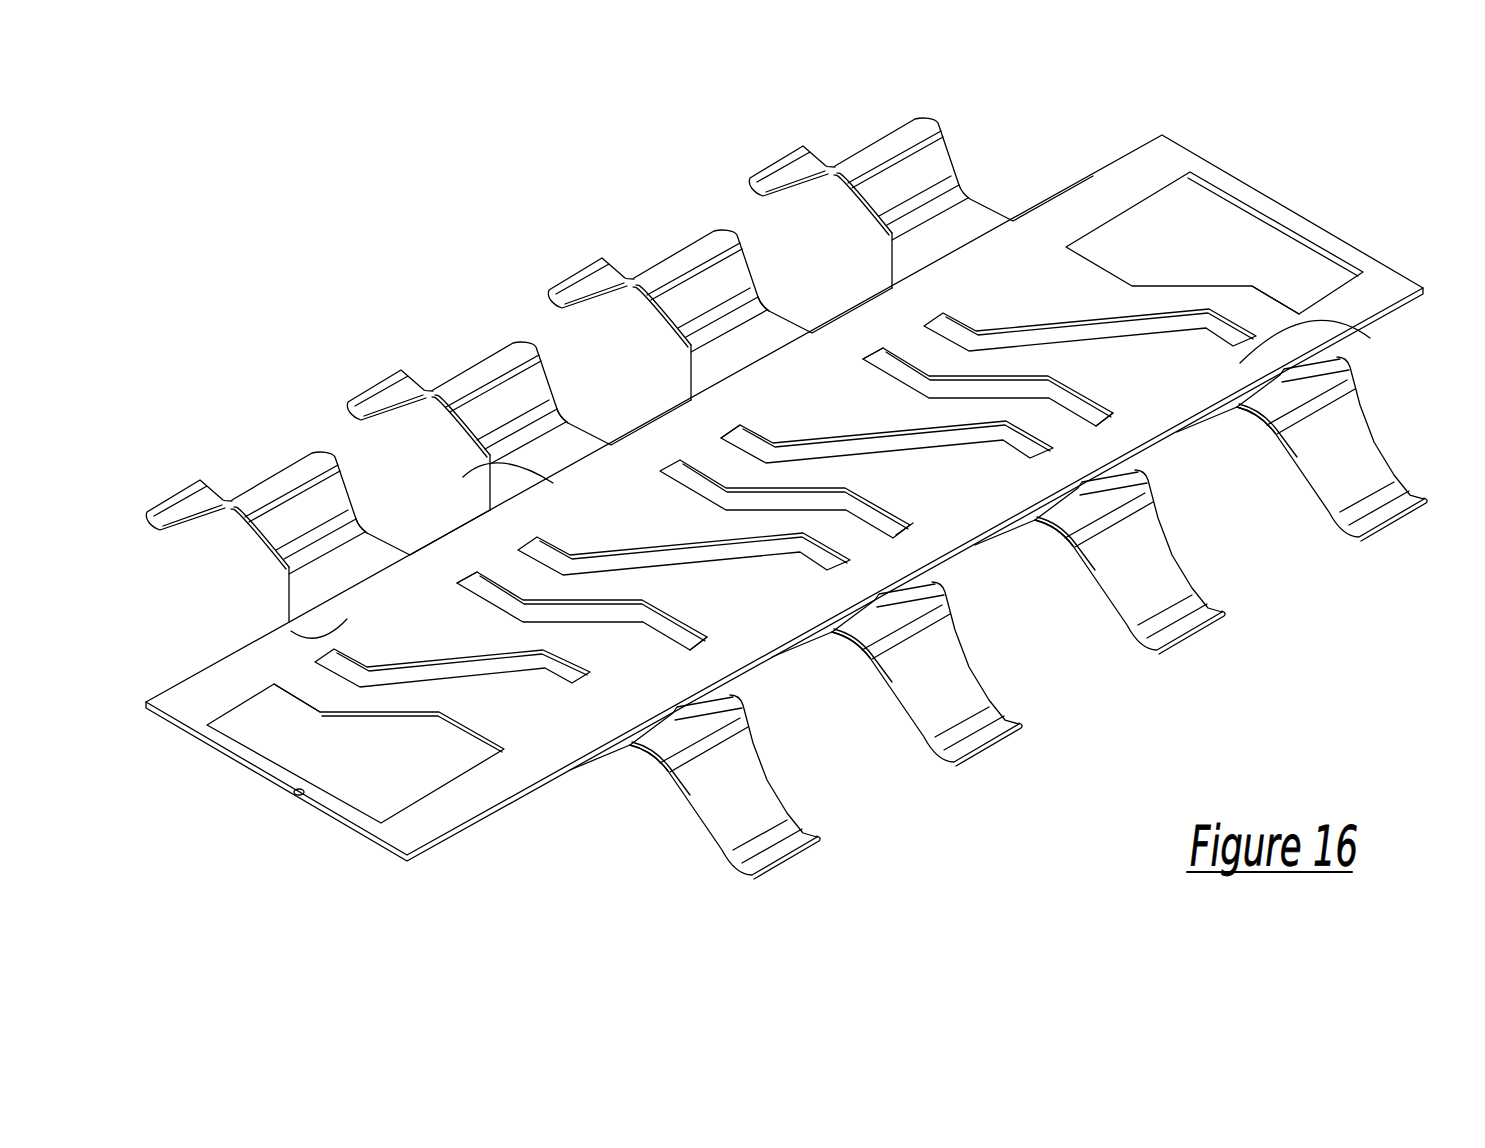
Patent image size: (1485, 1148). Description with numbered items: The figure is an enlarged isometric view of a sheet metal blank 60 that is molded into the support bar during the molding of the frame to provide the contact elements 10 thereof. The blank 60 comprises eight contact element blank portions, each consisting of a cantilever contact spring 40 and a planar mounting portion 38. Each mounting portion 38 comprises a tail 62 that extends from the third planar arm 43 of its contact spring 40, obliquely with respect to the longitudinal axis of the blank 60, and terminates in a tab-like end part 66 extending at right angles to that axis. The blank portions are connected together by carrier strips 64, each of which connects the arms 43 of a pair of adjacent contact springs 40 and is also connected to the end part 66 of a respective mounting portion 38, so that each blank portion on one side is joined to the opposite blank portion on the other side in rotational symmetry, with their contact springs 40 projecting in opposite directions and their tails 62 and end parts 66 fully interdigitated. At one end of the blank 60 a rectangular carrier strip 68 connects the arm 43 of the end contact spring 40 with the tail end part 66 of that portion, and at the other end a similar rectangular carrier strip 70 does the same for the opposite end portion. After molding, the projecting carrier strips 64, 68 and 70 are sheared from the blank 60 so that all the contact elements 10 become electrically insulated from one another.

The contact element 10 is at (975, 266).
The mounting portion 38 is at (1183, 286).
The contact spring 40 is at (955, 129).
The third planar arm 43 is at (987, 227).
The blank 60 is at (1030, 188).
The tail 62 is at (1188, 295).
The carrier strip 64 is at (887, 298).
The tab-like end part 66 is at (1262, 310).
The rectangular carrier strip 68 is at (1280, 212).
The rectangular carrier strip 70 is at (298, 794).